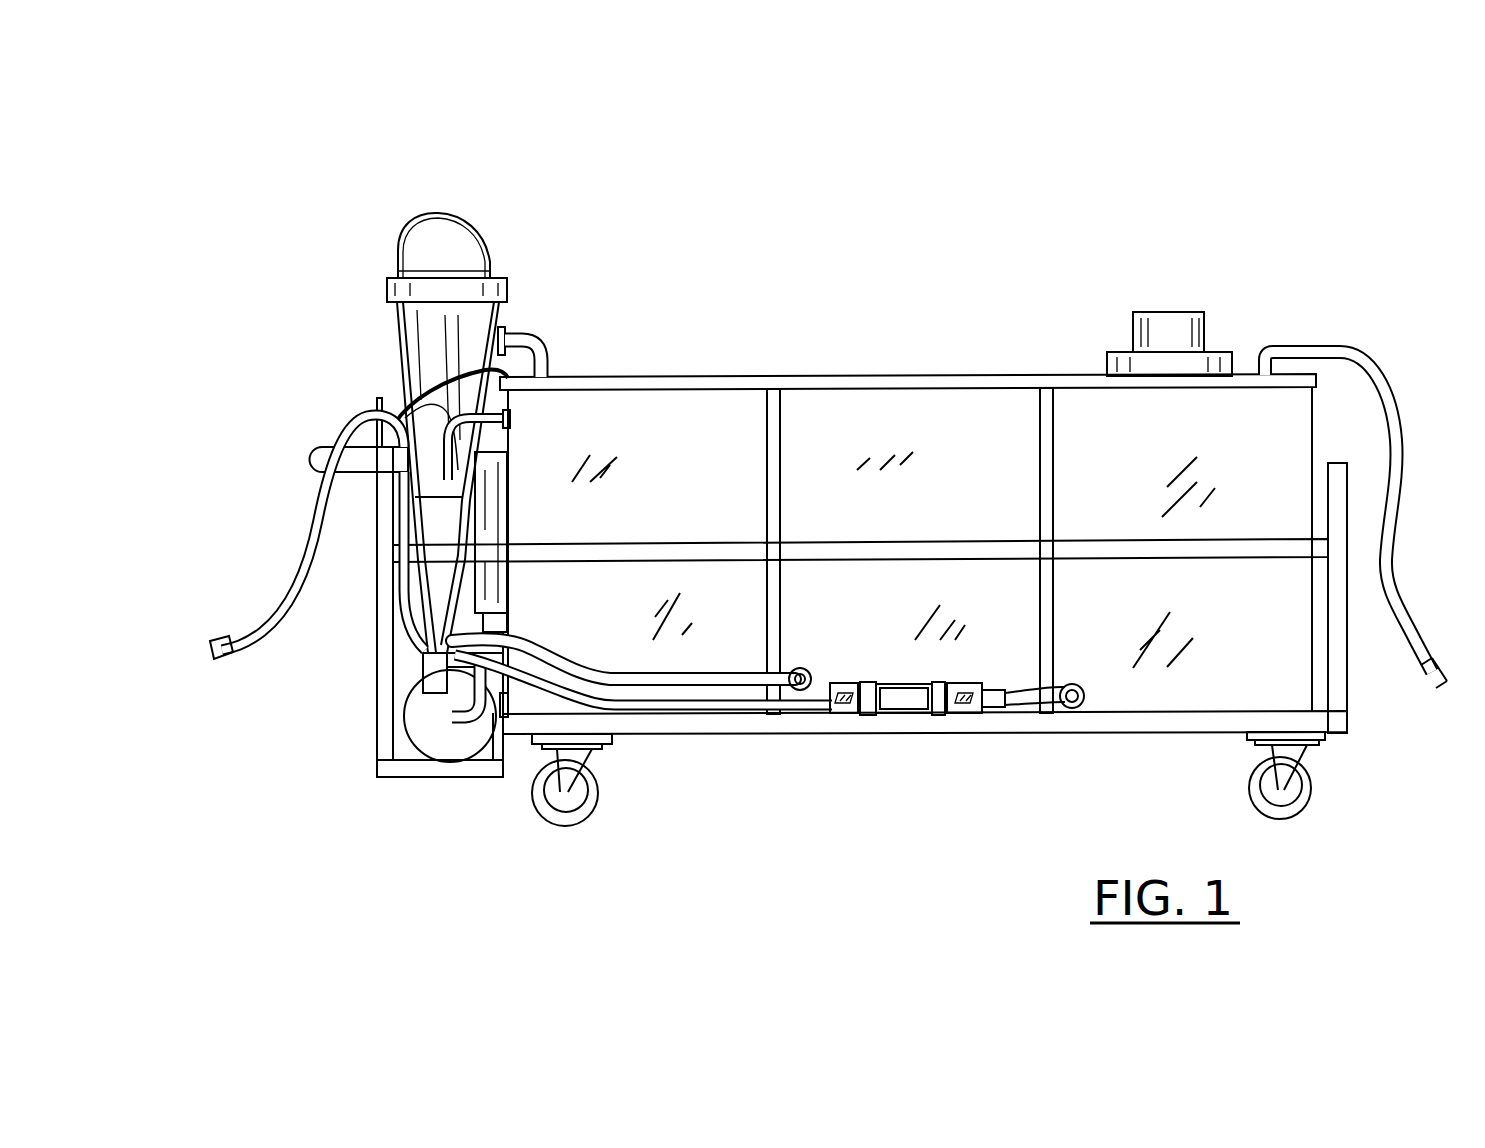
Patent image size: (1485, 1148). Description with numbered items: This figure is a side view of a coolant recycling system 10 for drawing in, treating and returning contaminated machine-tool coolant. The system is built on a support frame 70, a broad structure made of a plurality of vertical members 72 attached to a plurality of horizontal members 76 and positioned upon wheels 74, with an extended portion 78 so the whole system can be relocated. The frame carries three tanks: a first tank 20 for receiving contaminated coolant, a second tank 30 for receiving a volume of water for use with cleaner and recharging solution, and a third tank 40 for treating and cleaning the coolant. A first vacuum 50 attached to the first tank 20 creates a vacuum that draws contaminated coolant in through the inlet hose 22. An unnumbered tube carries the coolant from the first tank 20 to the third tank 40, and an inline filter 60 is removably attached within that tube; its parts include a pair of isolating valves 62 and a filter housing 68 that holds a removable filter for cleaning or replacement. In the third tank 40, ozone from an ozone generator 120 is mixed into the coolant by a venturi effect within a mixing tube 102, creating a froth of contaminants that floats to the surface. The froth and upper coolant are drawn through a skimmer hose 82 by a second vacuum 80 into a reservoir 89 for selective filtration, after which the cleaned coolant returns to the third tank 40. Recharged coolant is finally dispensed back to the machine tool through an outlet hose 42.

The coolant recycling system 10 is at (1184, 140).
The first tank 20 is at (1095, 410).
The inlet hose 22 is at (1332, 348).
The second tank 30 is at (855, 470).
The third tank 40 is at (718, 463).
The outlet hose 42 is at (258, 630).
The first vacuum 50 is at (1170, 330).
The inline filter 60 is at (876, 721).
The isolating valves 62 is at (837, 712).
The filter housing 68 is at (913, 705).
The support frame 70 is at (1043, 723).
The vertical members 72 is at (1338, 677).
The wheels 74 is at (563, 813).
The horizontal members 76 is at (1143, 547).
The extended portion 78 is at (400, 770).
The second vacuum 80 is at (486, 229).
The skimmer hose 82 is at (533, 337).
The reservoir 89 is at (393, 343).
The mixing tube 102 is at (380, 417).
The ozone generator 120 is at (490, 513).